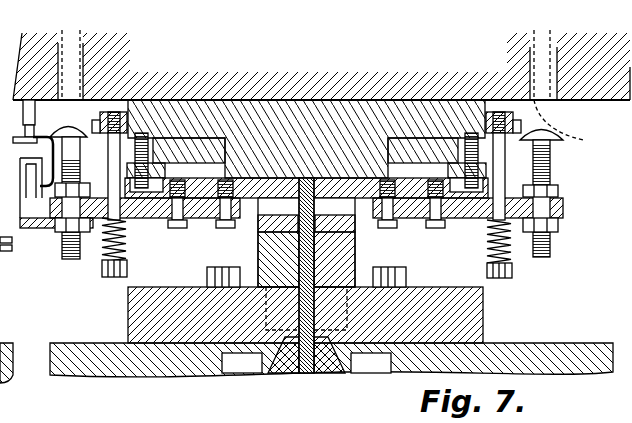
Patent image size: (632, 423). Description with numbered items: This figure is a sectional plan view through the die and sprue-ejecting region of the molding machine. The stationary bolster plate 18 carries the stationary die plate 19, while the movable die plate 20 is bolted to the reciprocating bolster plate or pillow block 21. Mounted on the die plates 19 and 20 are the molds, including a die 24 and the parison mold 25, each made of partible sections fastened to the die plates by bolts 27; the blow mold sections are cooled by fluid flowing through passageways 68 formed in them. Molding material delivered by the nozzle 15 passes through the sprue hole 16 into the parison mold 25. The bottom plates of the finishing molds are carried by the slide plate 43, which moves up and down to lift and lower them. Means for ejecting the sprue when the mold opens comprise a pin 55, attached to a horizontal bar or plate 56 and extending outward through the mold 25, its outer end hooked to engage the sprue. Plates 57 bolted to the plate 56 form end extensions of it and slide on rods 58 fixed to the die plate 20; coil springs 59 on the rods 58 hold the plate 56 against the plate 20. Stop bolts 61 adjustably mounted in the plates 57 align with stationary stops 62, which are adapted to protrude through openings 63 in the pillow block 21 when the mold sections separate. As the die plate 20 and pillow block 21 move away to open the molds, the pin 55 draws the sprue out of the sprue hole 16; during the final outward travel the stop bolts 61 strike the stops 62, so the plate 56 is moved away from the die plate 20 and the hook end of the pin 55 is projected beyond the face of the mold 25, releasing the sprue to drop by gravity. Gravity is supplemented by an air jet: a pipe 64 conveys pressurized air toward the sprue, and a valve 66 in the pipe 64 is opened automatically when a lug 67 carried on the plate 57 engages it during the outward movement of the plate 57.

The nozzle 15 is at (331, 350).
The sprue hole 16 is at (357, 253).
The bolster plate 18 is at (118, 358).
The stationary die plate 19 is at (134, 325).
The movable die plate 20 is at (255, 108).
The bolster plate 21 is at (407, 70).
The die 24 is at (0, 280).
The parison mold 25 is at (352, 226).
The bolts 27 is at (0, 310).
The slide plate 43 is at (178, 232).
The pin 55 is at (258, 242).
The bar or plate 56 is at (258, 218).
The plates 57 is at (150, 217).
The rods 58 is at (505, 170).
The coil springs 59 is at (512, 252).
The stop bolts 61 is at (550, 182).
The stationary stops 62 is at (80, 72).
The openings 63 is at (83, 53).
The pipe 64 is at (50, 170).
The valve 66 is at (36, 138).
The lug 67 is at (43, 222).
The passageways 68 is at (46, 222).